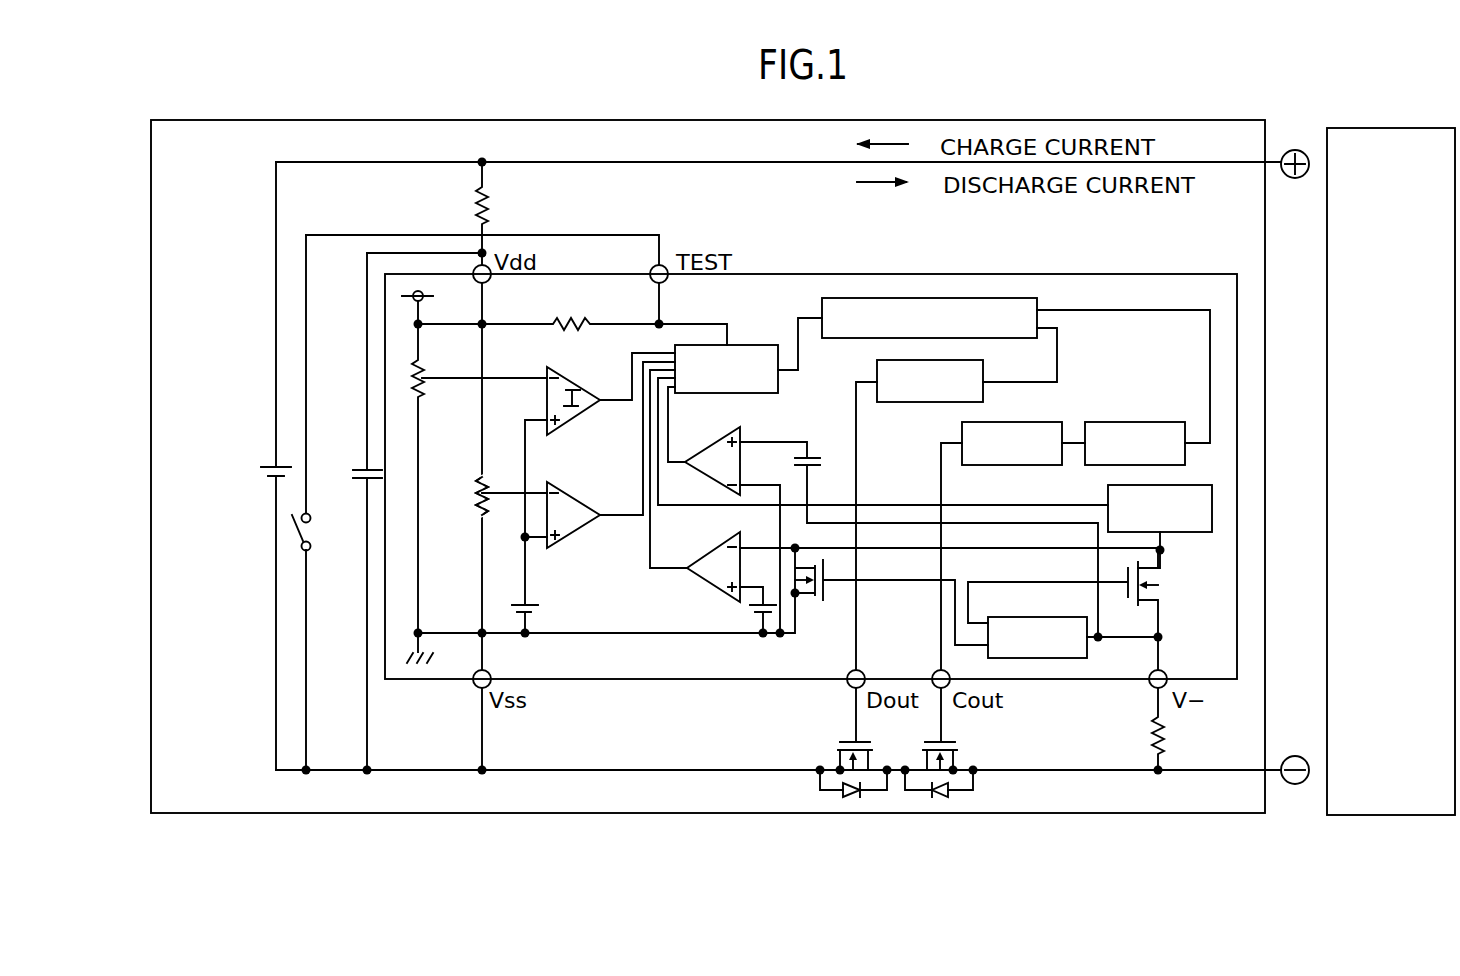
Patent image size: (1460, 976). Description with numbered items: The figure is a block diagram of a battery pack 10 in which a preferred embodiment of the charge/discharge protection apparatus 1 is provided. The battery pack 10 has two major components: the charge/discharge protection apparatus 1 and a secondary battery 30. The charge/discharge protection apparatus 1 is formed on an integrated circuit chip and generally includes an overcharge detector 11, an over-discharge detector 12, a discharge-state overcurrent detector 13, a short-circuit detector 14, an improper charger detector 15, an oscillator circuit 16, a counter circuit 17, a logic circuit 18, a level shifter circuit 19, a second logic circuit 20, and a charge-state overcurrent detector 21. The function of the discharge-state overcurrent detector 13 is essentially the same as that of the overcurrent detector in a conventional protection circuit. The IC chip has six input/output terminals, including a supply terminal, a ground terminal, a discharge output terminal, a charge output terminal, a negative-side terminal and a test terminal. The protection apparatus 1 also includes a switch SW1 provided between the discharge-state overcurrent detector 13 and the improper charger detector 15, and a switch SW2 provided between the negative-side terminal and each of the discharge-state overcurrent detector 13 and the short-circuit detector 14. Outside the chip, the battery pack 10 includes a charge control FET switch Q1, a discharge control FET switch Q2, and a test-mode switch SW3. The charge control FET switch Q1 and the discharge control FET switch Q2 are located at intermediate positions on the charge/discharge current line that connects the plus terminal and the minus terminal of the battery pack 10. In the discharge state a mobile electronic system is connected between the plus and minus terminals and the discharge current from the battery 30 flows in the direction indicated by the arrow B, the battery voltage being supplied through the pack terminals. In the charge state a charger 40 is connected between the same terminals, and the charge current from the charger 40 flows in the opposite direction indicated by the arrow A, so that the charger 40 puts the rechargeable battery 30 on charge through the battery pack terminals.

The charge/discharge protection apparatus 1 is at (764, 276).
The battery pack 10 is at (372, 122).
The overcharge detector (OCD) 11 is at (576, 384).
The over-discharge detector (ODD) 12 is at (588, 500).
The discharge-state overcurrent detector (DOCD) 13 is at (690, 574).
The short-circuit detector (SCD) 14 is at (1199, 458).
The improper charger detector (ICD) 15 is at (1034, 590).
The oscillator circuit (OSC) 16 is at (746, 343).
The counter circuit (CNT) 17 is at (1010, 340).
The logic circuit (LGC) 18 is at (1152, 394).
The level shifter circuit (LS) 19 is at (1047, 394).
The logic circuit (LGC) 20 is at (886, 404).
The charge-state overcurrent detector (COCD) 21 is at (712, 460).
The secondary battery 30 is at (272, 480).
The charger 40 is at (1322, 814).
The charge current direction A is at (880, 143).
The discharge current direction B is at (880, 182).
The switch SW1 is at (890, 595).
The switch SW2 is at (1093, 593).
The test-mode switch SW3 is at (329, 502).
The charge control FET switch Q1 is at (949, 742).
The discharge control FET switch Q2 is at (843, 742).